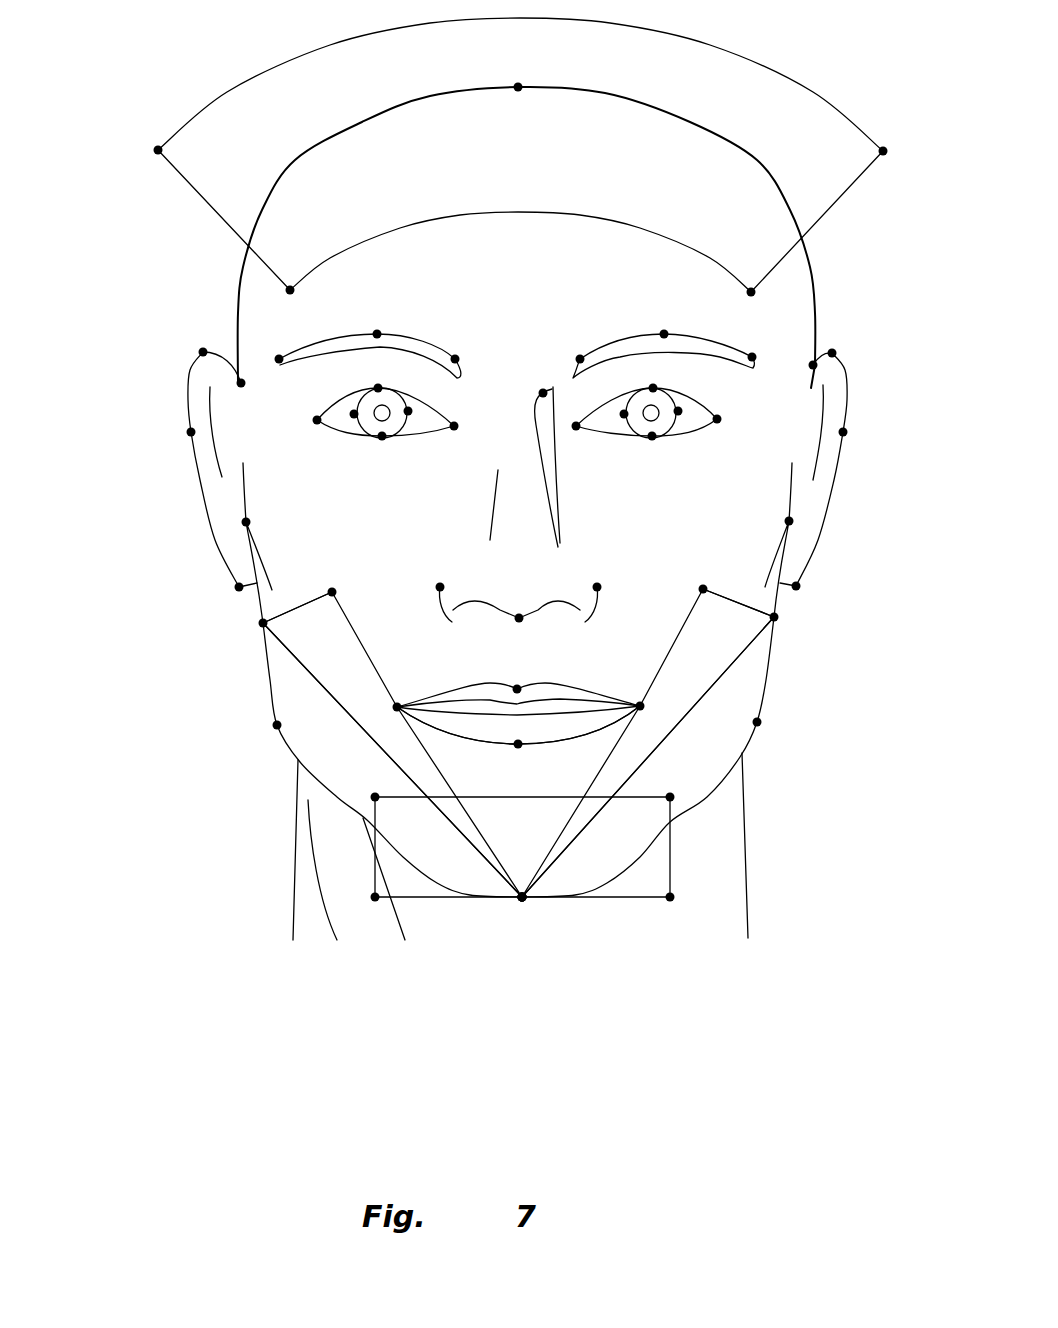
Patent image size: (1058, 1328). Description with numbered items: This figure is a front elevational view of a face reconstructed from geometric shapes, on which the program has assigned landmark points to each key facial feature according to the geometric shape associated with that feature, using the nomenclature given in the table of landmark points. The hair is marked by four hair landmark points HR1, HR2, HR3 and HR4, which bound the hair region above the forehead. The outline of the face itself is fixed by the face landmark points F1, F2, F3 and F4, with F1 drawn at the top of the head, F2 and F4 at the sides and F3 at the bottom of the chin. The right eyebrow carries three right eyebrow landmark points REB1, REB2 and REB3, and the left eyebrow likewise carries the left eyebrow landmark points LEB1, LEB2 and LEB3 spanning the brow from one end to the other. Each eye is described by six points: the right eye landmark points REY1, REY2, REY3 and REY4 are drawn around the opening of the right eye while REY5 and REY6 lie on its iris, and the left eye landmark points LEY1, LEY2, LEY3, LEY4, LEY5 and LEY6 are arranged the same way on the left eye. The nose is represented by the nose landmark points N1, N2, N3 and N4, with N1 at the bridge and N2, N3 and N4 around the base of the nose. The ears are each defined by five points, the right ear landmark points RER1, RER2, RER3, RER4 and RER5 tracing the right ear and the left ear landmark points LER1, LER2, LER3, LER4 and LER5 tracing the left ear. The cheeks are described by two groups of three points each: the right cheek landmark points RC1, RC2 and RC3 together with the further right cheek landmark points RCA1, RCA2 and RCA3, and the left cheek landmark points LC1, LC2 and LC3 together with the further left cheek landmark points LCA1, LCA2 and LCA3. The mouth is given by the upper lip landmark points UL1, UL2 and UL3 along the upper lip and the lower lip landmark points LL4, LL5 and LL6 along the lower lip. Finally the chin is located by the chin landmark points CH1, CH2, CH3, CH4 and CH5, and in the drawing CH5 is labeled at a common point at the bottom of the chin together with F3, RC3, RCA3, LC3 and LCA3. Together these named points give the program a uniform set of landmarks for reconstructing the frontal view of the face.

The face landmark point F1 is at (520, 60).
The hair landmark point HR1 is at (298, 265).
The hair landmark point HR2 is at (127, 149).
The hair landmark point HR3 is at (910, 150).
The hair landmark point HR4 is at (750, 266).
The right ear landmark point RER1 is at (275, 389).
The right ear landmark point RER2 is at (199, 332).
The right ear landmark point RER3 is at (140, 436).
The right ear landmark point RER4 is at (234, 614).
The right ear landmark point RER5 is at (280, 560).
The left ear landmark point LER1 is at (791, 381).
The left ear landmark point LER2 is at (858, 333).
The left ear landmark point LER3 is at (878, 436).
The left ear landmark point LER4 is at (811, 612).
The left ear landmark point LER5 is at (759, 560).
The right eyebrow landmark point REB1 is at (281, 336).
The right eyebrow landmark point REB2 is at (379, 312).
The right eyebrow landmark point REB3 is at (476, 336).
The left eyebrow landmark point LEB1 is at (575, 336).
The left eyebrow landmark point LEB2 is at (667, 312).
The left eyebrow landmark point LEB3 is at (767, 335).
The right eye landmark point REY1 is at (289, 434).
The right eye landmark point REY2 is at (378, 388).
The right eye landmark point REY3 is at (488, 433).
The right eye landmark point REY4 is at (388, 458).
The right eye landmark point REY5 is at (354, 414).
The right eye landmark point REY6 is at (408, 411).
The left eye landmark point LEY1 is at (589, 403).
The left eye landmark point LEY2 is at (677, 372).
The left eye landmark point LEY3 is at (751, 421).
The left eye landmark point LEY4 is at (660, 455).
The left eye landmark point LEY5 is at (624, 414).
The left eye landmark point LEY6 is at (678, 411).
The nose landmark point N1 is at (542, 378).
The nose landmark point N2 is at (446, 570).
The nose landmark point N3 is at (520, 602).
The nose landmark point N4 is at (597, 570).
The face landmark point F2 is at (755, 520).
The face landmark point F3 is at (522, 897).
The face landmark point F4 is at (268, 520).
The right cheek landmark point RC1 is at (346, 574).
The right cheek landmark point RC2 is at (297, 623).
The right cheek landmark point RC3 is at (522, 897).
The right cheek landmark point RCA1 is at (392, 760).
The right cheek landmark point RCA2 is at (246, 744).
The right cheek landmark point RCA3 is at (522, 897).
The left cheek landmark point LC1 is at (710, 573).
The left cheek landmark point LC2 is at (738, 621).
The left cheek landmark point LC3 is at (522, 897).
The left cheek landmark point LCA1 is at (648, 757).
The left cheek landmark point LCA2 is at (792, 736).
The left cheek landmark point LCA3 is at (522, 897).
The upper lip landmark point UL1 is at (411, 691).
The upper lip landmark point UL2 is at (526, 673).
The upper lip landmark point UL3 is at (648, 691).
The lower lip landmark point LL4 is at (443, 729).
The lower lip landmark point LL5 is at (526, 763).
The lower lip landmark point LL6 is at (593, 728).
The chin landmark point CH1 is at (373, 782).
The chin landmark point CH2 is at (671, 782).
The chin landmark point CH3 is at (376, 917).
The chin landmark point CH4 is at (673, 917).
The chin landmark point CH5 is at (522, 900).